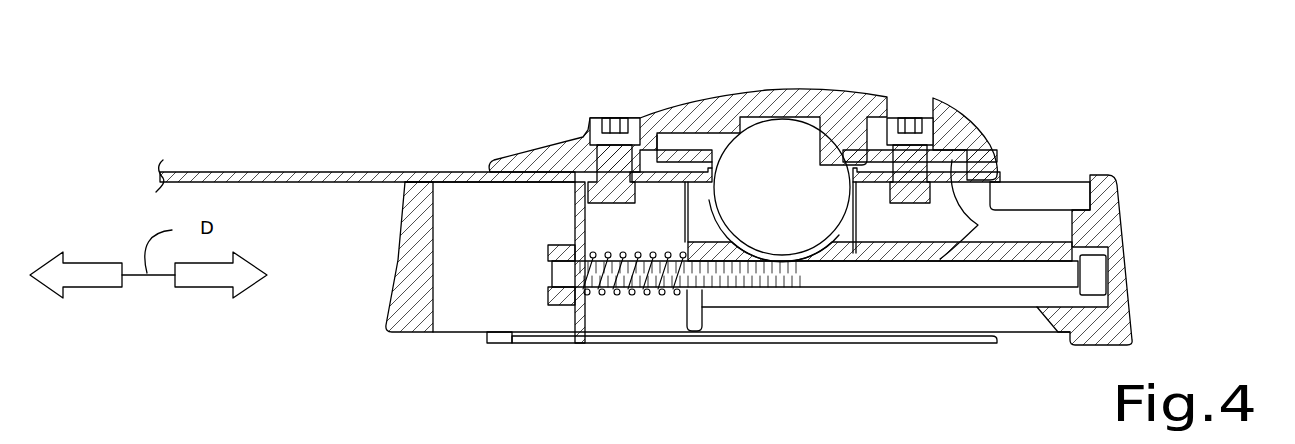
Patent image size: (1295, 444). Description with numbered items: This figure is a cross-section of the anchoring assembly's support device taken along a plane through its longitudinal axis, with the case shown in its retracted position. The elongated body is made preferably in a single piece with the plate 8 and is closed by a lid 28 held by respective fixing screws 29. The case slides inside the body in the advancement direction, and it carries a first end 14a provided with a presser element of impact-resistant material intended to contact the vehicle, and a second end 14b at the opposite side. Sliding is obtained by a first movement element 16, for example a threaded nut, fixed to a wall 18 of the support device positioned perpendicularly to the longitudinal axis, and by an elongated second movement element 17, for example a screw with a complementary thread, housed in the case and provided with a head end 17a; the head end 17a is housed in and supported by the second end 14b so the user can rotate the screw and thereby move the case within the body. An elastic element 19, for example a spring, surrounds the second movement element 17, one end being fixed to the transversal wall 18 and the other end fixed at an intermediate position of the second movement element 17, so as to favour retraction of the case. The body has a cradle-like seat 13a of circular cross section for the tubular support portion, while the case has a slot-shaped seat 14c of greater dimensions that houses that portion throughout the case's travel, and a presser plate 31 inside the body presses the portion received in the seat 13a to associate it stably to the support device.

The plate 8 is at (282, 178).
The lid 28 is at (560, 152).
The fixing screws 29 is at (603, 116).
The presser plate 31 is at (690, 152).
The seat 13a is at (828, 240).
The first end 14a is at (420, 272).
The second end 14b is at (1110, 182).
The seat 14c is at (958, 165).
The first movement element 16 is at (562, 300).
The second movement element 17 is at (995, 272).
The head end 17a is at (1090, 273).
The wall 18 is at (578, 300).
The elastic element 19 is at (680, 293).